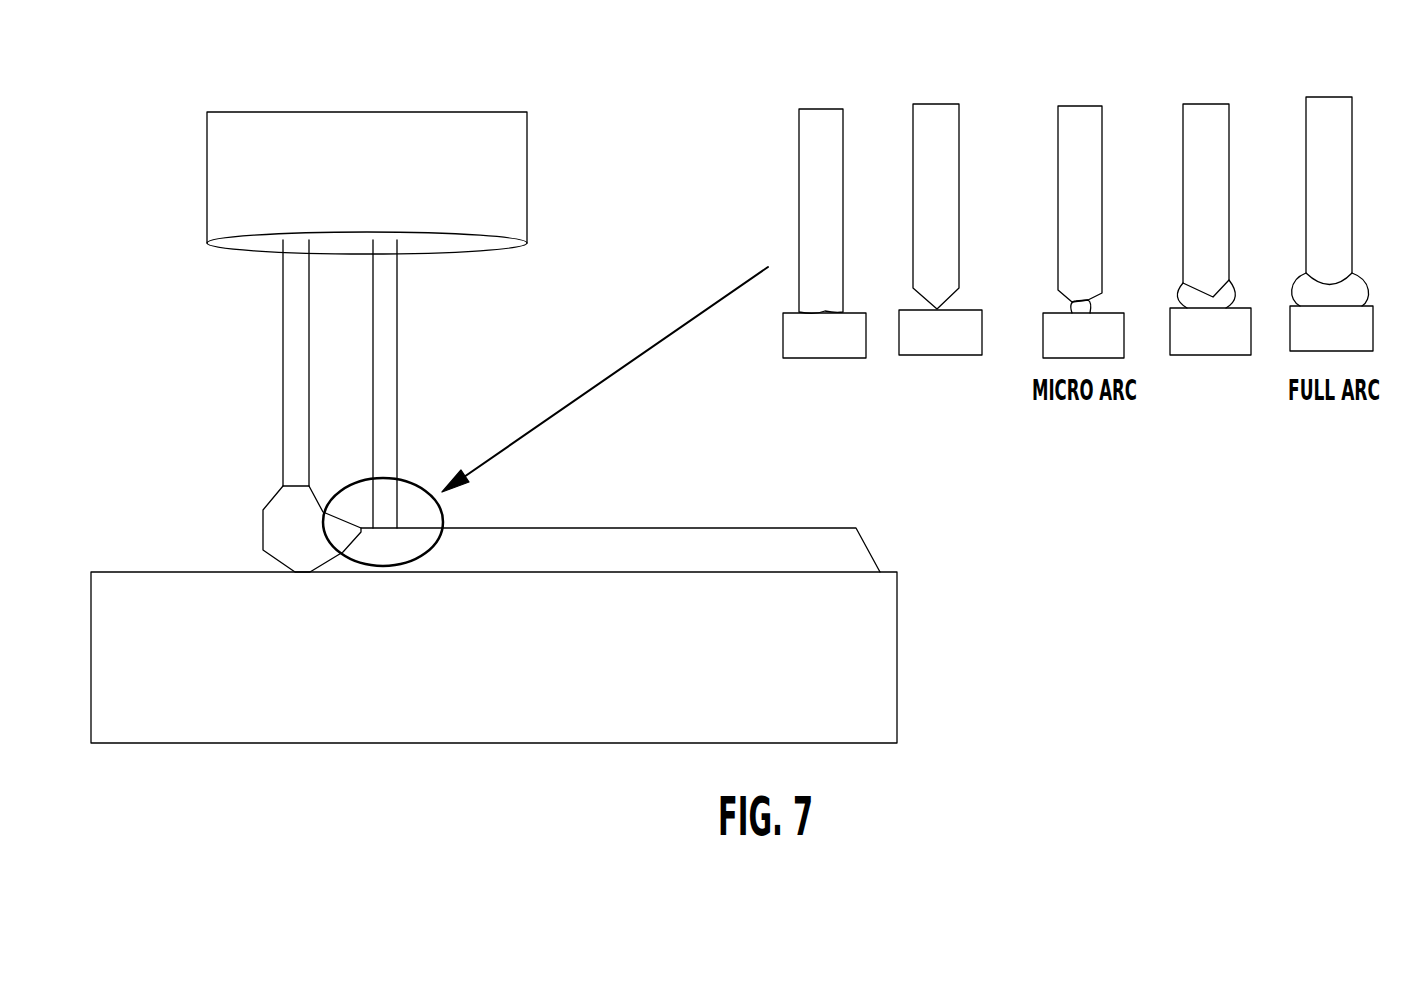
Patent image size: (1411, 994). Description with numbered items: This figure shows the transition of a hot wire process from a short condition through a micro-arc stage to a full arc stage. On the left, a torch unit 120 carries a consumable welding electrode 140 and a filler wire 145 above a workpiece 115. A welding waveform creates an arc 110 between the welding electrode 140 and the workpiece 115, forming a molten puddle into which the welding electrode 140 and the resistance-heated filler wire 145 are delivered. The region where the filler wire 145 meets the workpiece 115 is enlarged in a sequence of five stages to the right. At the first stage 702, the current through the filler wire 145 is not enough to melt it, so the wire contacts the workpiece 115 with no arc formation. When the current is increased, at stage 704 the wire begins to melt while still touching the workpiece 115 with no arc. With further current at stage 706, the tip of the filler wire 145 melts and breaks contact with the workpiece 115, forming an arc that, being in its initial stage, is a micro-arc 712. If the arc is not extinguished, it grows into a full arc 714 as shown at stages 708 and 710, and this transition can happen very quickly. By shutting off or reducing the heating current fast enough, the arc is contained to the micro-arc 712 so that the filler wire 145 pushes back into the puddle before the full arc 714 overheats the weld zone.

The arc 110 is at (263, 520).
The workpiece 115 is at (897, 636).
The torch unit 120 is at (367, 183).
The welding electrode 140 is at (283, 382).
The filler wire 145 is at (397, 328).
The short condition 702 is at (824, 216).
The melting stage 704 is at (940, 212).
The micro-arc formation stage 706 is at (1083, 215).
The arc growth stage 708 is at (1210, 212).
The full arc stage 710 is at (1331, 207).
The micro-arc 712 is at (1072, 308).
The full arc 714 is at (1353, 278).